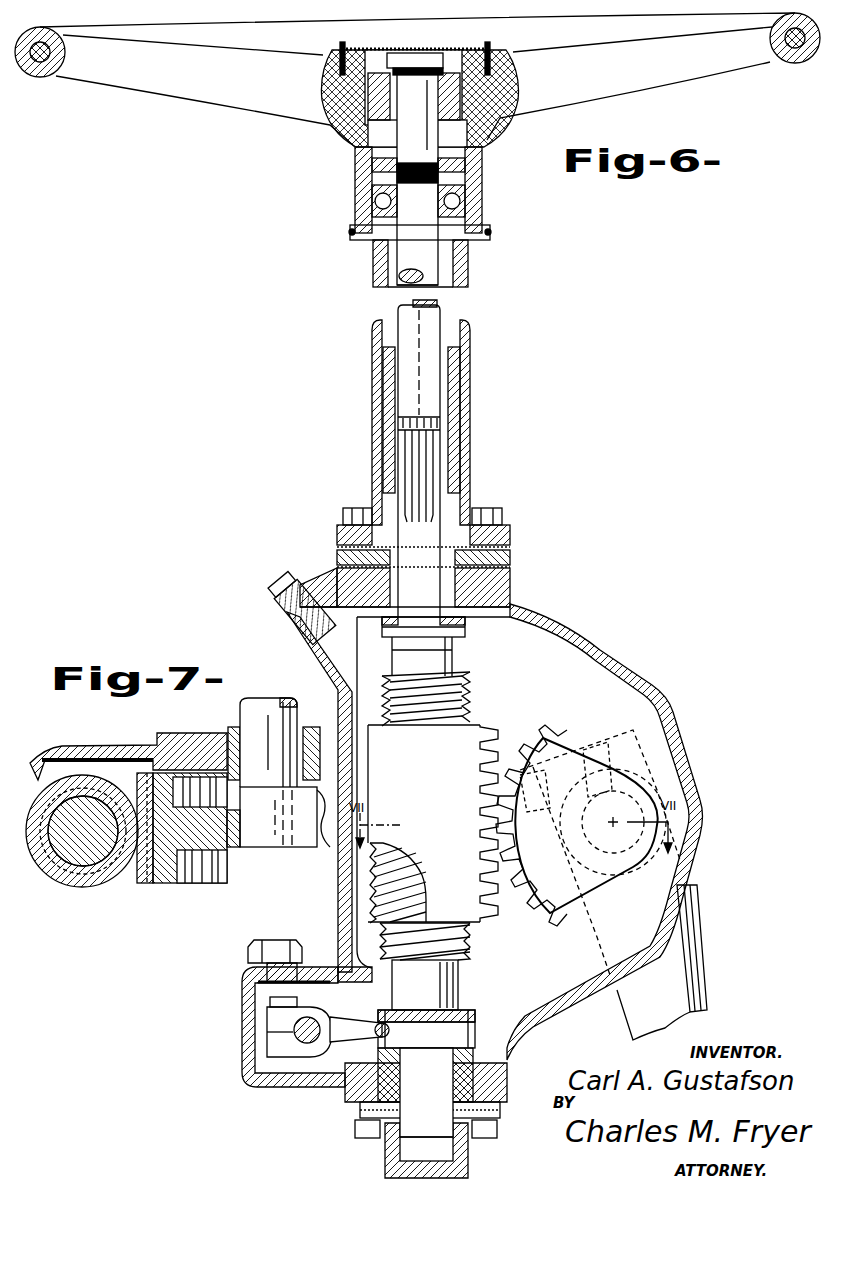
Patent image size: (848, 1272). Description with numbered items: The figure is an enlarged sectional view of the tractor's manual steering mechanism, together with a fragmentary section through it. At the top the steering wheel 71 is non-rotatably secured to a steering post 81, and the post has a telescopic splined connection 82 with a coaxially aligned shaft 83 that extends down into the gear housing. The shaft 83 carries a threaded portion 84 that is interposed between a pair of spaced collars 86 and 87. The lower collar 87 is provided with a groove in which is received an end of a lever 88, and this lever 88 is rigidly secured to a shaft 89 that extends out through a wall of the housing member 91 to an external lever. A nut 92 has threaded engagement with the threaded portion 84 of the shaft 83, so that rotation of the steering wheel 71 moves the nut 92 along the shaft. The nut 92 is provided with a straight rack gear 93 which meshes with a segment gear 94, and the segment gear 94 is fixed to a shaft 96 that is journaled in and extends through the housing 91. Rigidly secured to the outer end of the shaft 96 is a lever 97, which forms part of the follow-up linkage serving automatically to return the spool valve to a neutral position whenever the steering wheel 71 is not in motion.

In FIG. 6, the steering wheel 71 is at (222, 72).
In FIG. 6, the steering post 81 is at (423, 295).
In FIG. 6, the telescopic splined connection 82 is at (435, 473).
In FIG. 6, the shaft 83 is at (446, 661).
In FIG. 6, the threaded portion 84 is at (462, 704).
In FIG. 7, the threaded portion 84 is at (73, 857).
In FIG. 6, the collar 86 is at (465, 631).
In FIG. 6, the collar 87 is at (476, 1035).
In FIG. 6, the lever 88 is at (355, 1025).
In FIG. 6, the shaft 89 is at (307, 1027).
In FIG. 6, the housing member 91 is at (601, 660).
In FIG. 7, the housing member 91 is at (118, 738).
In FIG. 6, the nut 92 is at (438, 780).
In FIG. 7, the nut 92 is at (123, 873).
In FIG. 6, the straight rack gear 93 is at (492, 731).
In FIG. 6, the segment gear 94 is at (543, 739).
In FIG. 7, the segment gear 94 is at (163, 870).
In FIG. 6, the shaft 96 is at (625, 827).
In FIG. 7, the shaft 96 is at (253, 713).
In FIG. 6, the lever 97 is at (680, 983).